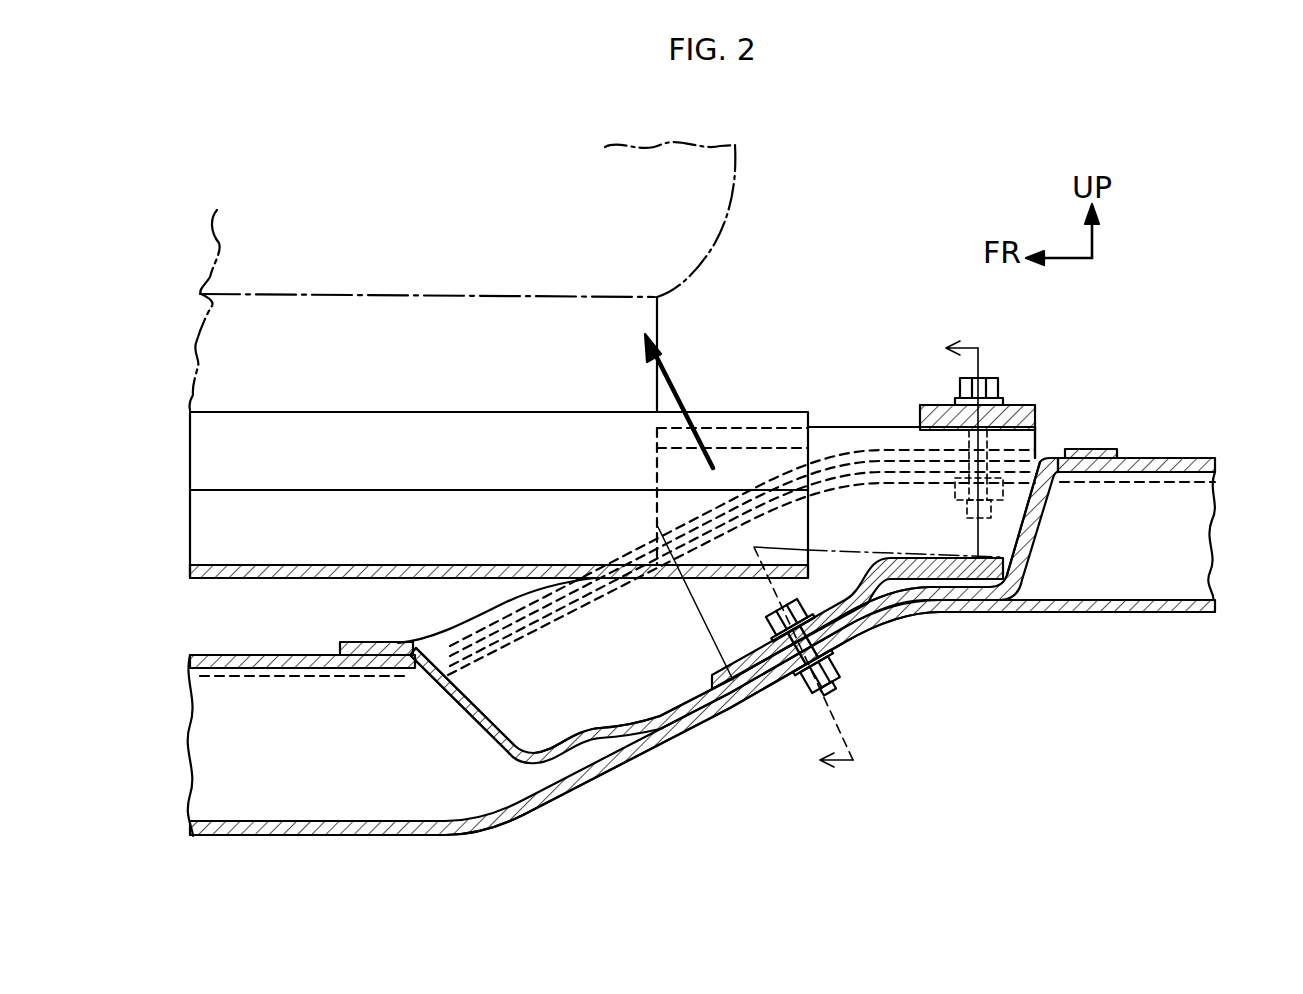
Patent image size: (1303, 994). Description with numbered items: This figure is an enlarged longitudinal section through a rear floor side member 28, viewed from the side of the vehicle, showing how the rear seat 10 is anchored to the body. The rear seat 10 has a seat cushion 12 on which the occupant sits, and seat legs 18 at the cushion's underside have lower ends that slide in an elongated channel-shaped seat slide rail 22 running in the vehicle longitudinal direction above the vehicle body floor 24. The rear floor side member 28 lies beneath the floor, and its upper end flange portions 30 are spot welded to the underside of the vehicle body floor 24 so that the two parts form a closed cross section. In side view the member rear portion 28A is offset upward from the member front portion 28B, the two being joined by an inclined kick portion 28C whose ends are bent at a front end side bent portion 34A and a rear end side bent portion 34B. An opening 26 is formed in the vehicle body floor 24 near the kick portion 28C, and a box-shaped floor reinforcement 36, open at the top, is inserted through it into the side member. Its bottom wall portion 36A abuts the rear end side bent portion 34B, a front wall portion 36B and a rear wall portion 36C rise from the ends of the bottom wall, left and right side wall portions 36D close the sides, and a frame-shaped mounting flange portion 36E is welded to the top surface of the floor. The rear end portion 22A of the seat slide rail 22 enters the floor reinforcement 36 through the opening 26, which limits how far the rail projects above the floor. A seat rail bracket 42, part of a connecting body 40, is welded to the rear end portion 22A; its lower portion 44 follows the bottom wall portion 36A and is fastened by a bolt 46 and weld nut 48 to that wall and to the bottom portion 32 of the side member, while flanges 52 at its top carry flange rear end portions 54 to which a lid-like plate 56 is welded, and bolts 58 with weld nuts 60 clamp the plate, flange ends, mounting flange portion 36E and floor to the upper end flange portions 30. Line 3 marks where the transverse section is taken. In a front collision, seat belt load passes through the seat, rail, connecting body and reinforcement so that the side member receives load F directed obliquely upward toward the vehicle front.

The rear seat 10 is at (745, 212).
The seat cushion 12 is at (718, 247).
The seat legs 18 is at (660, 330).
The seat slide rail 22 is at (500, 408).
The rear end portion of the seat slide rail 22A is at (730, 553).
The vehicle body floor 24 is at (1175, 454).
The opening 26 is at (1050, 440).
The rear floor side member 28 is at (1105, 614).
The member rear portion 28A is at (1120, 614).
The member front portion 28B is at (283, 836).
The kick portion 28C is at (637, 765).
The upper end flange portions 30 is at (945, 497).
The bottom portion 32 is at (677, 748).
The front end side bent portion 34A is at (490, 832).
The rear end side bent portion 34B is at (937, 613).
The floor reinforcement 36 is at (1048, 498).
The bottom wall portion 36A is at (888, 633).
The front wall portion 36B is at (472, 722).
The rear wall portion 36C is at (1040, 540).
The side wall portions 36D is at (493, 745).
The mounting flange portion 36E is at (1105, 449).
The connecting body 40 is at (800, 372).
The seat rail bracket 42 is at (833, 424).
The lower portion of the seat rail bracket 44 is at (842, 604).
The bolt 46 is at (781, 679).
The weld nut 48 is at (815, 712).
The flanges 52 is at (888, 426).
The flange rear end portions 54 is at (1045, 425).
The plate 56 is at (1010, 404).
The bolts 58 is at (957, 387).
The weld nuts 60 is at (940, 508).
The section line 3- 3 is at (866, 552).
The load F is at (688, 403).